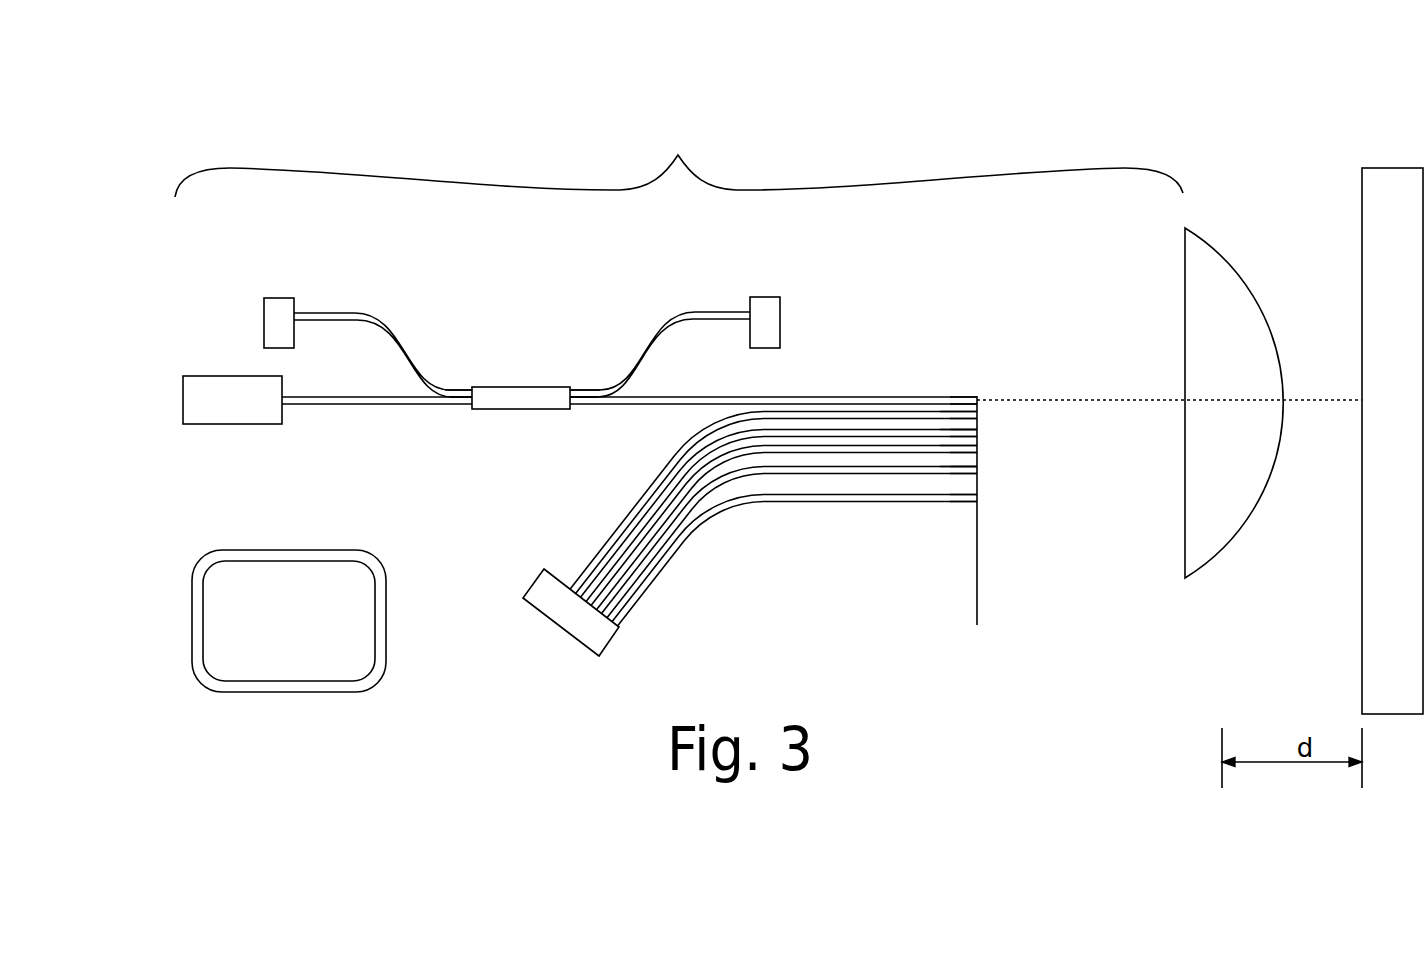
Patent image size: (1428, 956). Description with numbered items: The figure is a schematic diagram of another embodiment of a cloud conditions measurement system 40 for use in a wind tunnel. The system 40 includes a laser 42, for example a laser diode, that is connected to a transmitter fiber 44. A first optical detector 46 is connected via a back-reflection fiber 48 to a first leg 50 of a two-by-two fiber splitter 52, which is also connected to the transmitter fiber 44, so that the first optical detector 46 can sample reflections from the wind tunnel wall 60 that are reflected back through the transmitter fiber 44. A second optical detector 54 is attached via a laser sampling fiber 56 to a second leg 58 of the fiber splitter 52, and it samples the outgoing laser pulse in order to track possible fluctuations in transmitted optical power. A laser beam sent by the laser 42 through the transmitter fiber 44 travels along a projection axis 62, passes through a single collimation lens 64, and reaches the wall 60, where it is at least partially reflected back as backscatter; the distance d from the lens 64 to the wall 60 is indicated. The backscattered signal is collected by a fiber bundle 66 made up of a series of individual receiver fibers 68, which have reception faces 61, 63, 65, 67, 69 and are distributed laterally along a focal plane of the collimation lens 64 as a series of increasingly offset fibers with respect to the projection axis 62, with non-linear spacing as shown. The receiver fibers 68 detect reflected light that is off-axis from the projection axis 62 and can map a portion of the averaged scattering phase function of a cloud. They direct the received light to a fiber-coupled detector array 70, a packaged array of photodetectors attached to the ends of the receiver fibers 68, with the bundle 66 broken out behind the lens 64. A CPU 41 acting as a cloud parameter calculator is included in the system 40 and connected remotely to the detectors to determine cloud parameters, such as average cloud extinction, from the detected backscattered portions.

The cloud conditions measurement system 40 is at (679, 159).
The CPU 41 is at (325, 693).
The laser 42 is at (205, 425).
The transmitter fiber 44 is at (388, 407).
The first optical detector 46 is at (282, 300).
The back-reflection fiber 48 is at (408, 353).
The first leg 50 is at (468, 384).
The 2x2 fiber splitter 52 is at (516, 385).
The second optical detector 54 is at (782, 310).
The laser sampling fiber 56 is at (697, 320).
The second leg 58 is at (580, 386).
The wind tunnel wall 60 is at (1393, 200).
The reception face 61 is at (979, 413).
The projection axis 62 is at (1312, 395).
The reception face 63 is at (979, 429).
The single collimation lens 64 is at (1207, 280).
The reception face 65 is at (979, 447).
The fiber bundle 66 is at (767, 522).
The reception face 67 is at (979, 470).
The receiver fibers 68 is at (913, 467).
The reception face 69 is at (980, 504).
The fiber-coupled detector array 70 is at (555, 628).